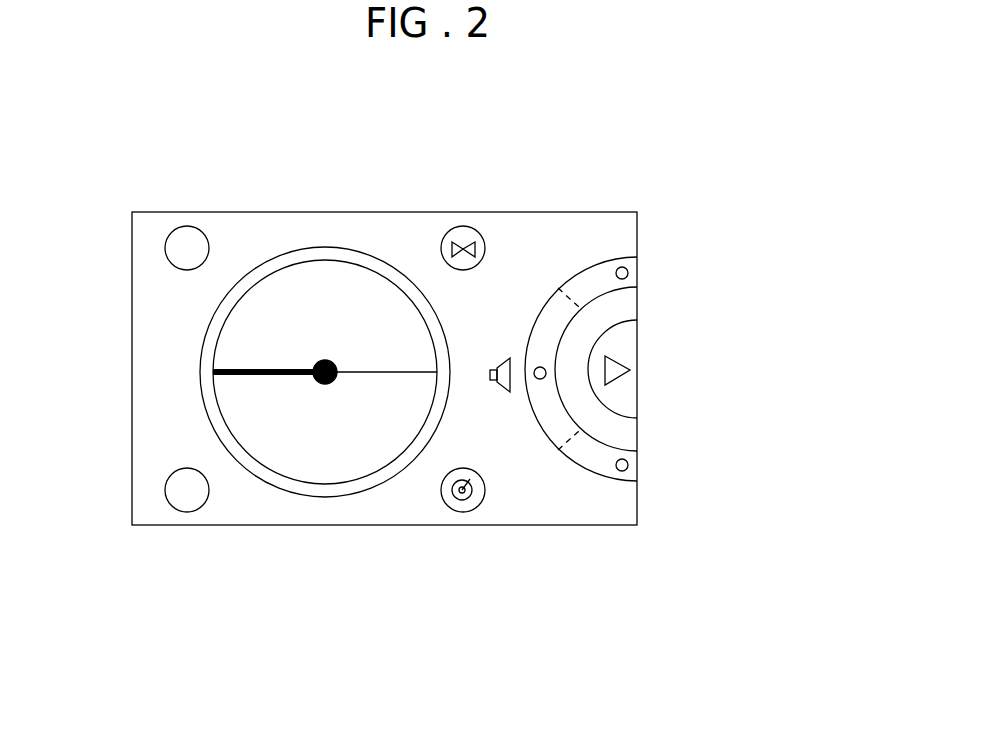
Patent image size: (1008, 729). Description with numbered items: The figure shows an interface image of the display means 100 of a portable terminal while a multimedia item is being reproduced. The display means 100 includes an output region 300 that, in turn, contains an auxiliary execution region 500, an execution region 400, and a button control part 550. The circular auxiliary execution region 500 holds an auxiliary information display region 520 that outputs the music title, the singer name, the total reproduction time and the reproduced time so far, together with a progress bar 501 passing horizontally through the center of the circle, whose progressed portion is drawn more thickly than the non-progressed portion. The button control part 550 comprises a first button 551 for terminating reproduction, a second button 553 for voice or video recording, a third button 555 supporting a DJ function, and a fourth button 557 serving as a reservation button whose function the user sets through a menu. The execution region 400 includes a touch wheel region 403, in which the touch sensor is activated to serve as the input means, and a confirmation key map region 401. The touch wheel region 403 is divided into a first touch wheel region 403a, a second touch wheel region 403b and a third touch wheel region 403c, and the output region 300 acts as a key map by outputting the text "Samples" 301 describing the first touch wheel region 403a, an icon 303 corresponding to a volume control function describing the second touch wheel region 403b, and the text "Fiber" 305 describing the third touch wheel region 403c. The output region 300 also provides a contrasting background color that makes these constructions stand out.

The display means 100 is at (658, 102).
The output region 300 is at (609, 362).
The "Samples" text 301 is at (630, 222).
The icon 303 is at (500, 343).
The "Fiber" text 305 is at (603, 517).
The execution region 400 is at (689, 442).
The confirmation key map region 401 is at (597, 388).
The touch wheel region 403 is at (665, 369).
The first touch wheel region 403a is at (600, 280).
The second touch wheel region 403b is at (550, 325).
The third touch wheel region 403c is at (593, 452).
The auxiliary execution region 500 is at (253, 432).
The progress bar 501 is at (240, 368).
The auxiliary information display region 520 is at (270, 452).
The button control part 550 is at (381, 419).
The first button 551 is at (455, 228).
The second button 553 is at (200, 228).
The third button 555 is at (180, 512).
The fourth button 557 is at (455, 512).